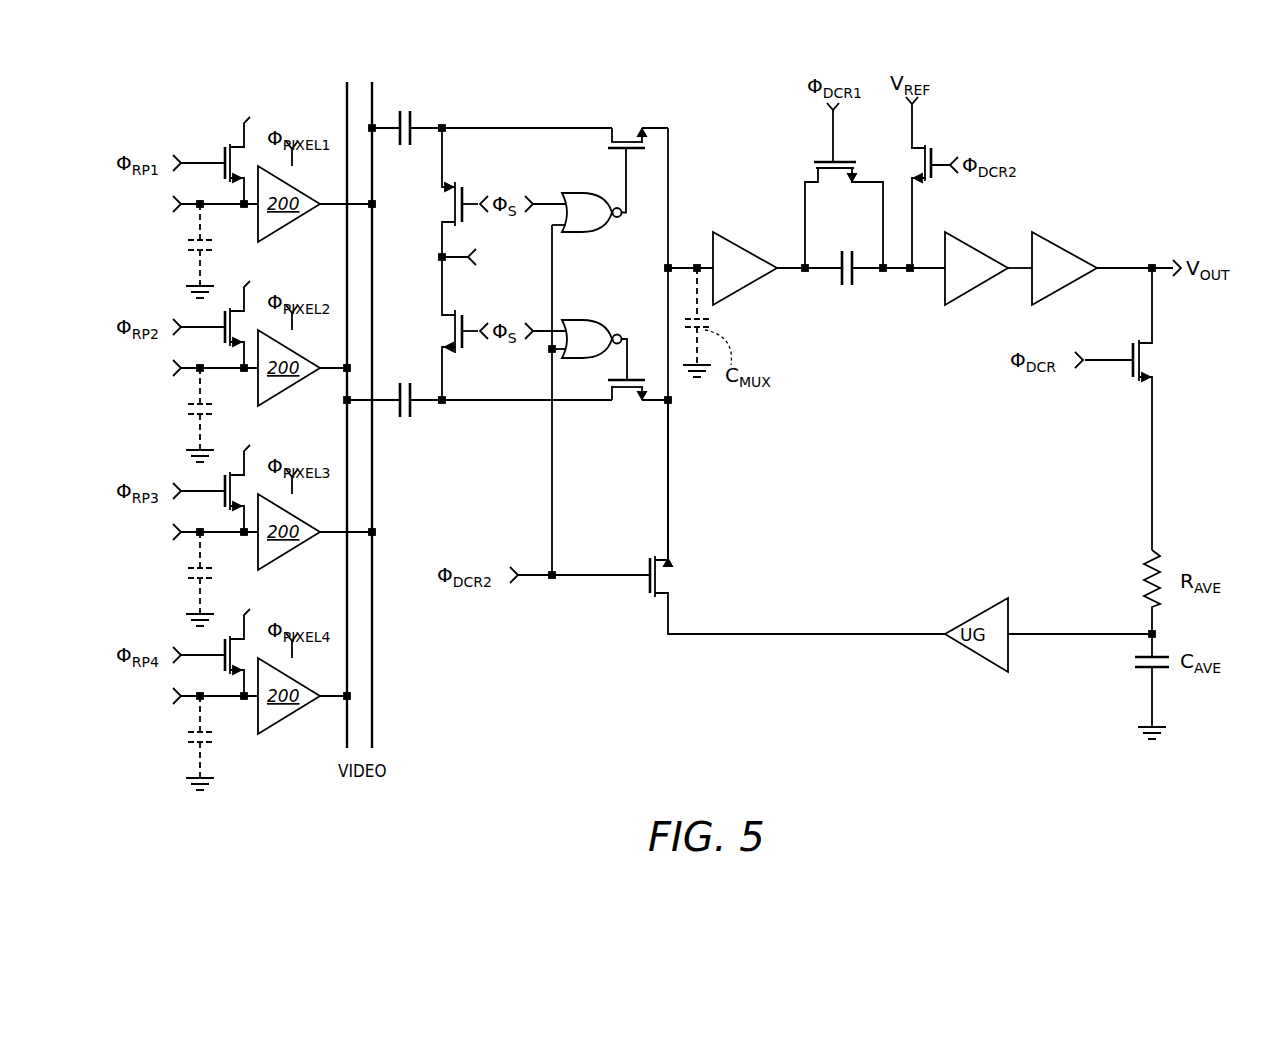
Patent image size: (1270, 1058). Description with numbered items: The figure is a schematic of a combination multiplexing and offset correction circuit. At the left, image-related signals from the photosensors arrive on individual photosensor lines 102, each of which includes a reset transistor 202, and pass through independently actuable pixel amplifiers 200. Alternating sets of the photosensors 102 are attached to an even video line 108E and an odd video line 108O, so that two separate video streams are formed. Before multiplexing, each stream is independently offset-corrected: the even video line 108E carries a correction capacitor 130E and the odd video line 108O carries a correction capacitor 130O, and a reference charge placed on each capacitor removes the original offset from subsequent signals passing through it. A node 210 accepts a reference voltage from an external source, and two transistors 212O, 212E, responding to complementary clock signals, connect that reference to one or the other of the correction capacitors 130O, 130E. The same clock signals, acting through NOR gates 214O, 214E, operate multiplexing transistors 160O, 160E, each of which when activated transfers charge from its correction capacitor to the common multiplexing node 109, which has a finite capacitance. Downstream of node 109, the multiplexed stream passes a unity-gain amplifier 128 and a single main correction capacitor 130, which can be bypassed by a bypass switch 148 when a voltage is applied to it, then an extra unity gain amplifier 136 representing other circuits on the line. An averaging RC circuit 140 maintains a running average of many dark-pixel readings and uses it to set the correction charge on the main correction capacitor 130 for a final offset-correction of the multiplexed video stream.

The photosensor line 102 is at (195, 210).
The pixel amplifier 200 is at (315, 437).
The reset transistor 202 is at (242, 134).
The odd video line 108O is at (346, 112).
The even video line 108E is at (373, 112).
The correction capacitor 130O is at (437, 110).
The correction capacitor 130E is at (413, 406).
The main correction capacitor 130 is at (835, 278).
The transistor 212O is at (428, 200).
The transistor 212E is at (430, 331).
The node 210 is at (450, 259).
The NOR gate 214O is at (578, 192).
The NOR gate 214E is at (578, 320).
The multiplexing transistor 160O is at (629, 117).
The multiplexing transistor 160E is at (633, 408).
The multiplexing node 109 is at (665, 267).
The unity-gain amplifier 128 is at (746, 252).
The bypass switch 148 is at (823, 146).
The unity gain amplifier 136 is at (980, 251).
The RC circuit 140 is at (1126, 622).